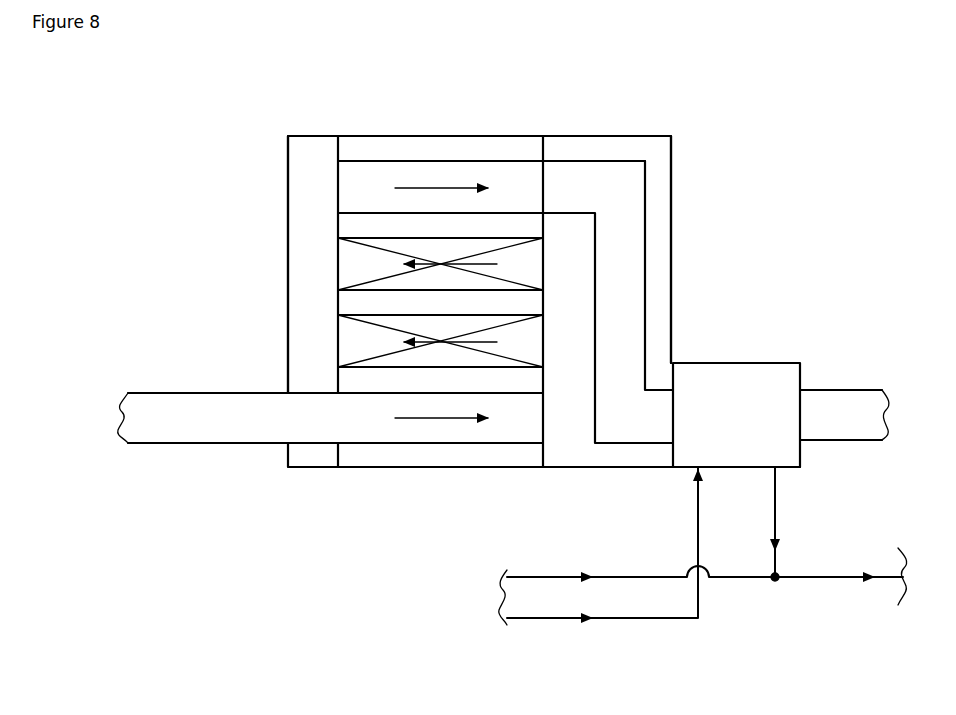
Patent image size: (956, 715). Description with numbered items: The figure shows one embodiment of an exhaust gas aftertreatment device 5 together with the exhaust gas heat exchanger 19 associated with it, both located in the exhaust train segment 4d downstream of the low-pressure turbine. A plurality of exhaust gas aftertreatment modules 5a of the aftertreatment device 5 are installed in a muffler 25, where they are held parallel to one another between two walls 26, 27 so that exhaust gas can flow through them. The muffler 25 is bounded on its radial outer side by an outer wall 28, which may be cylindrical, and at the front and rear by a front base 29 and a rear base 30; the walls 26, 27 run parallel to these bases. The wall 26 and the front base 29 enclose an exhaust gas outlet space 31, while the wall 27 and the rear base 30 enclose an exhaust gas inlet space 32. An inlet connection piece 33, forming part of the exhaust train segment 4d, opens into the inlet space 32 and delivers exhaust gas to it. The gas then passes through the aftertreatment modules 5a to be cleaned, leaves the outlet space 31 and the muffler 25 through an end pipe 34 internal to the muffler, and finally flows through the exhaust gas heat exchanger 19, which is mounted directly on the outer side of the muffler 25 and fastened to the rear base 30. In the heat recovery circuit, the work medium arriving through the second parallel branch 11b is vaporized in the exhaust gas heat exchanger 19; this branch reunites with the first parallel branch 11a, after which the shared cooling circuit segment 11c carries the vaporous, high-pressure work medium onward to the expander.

The muffler 25 is at (280, 119).
The outer wall 28 is at (398, 135).
The end pipe 34 is at (612, 172).
The exhaust gas inlet space 32 is at (640, 142).
The rear base 30 is at (673, 172).
The front base 29 is at (287, 195).
The exhaust gas outlet space 31 is at (302, 258).
The exhaust gas aftertreatment device 5 is at (436, 315).
The exhaust gas aftertreatment modules 5a is at (358, 260).
The exhaust train segment 4d is at (182, 430).
The wall 26 is at (343, 455).
The inlet connection piece 33 is at (430, 432).
The wall 27 is at (545, 457).
The exhaust gas heat exchanger 19 is at (724, 430).
The first parallel branch 11a is at (665, 573).
The second parallel branch 11b is at (775, 507).
The cooling circuit segment 11c is at (837, 580).